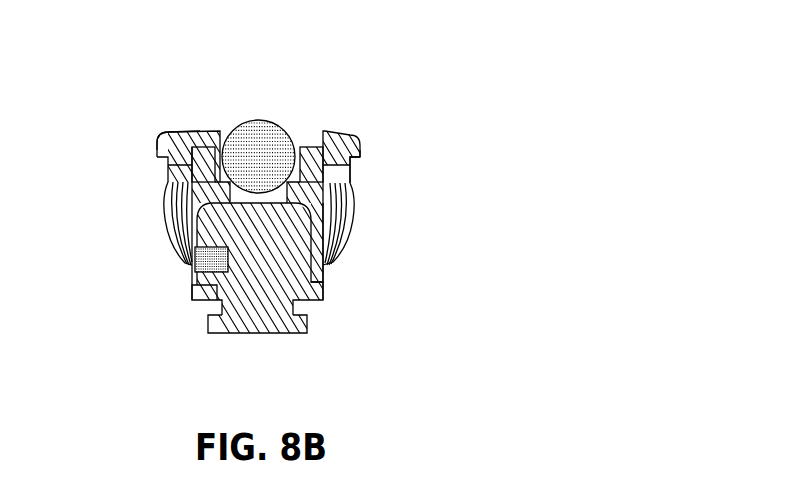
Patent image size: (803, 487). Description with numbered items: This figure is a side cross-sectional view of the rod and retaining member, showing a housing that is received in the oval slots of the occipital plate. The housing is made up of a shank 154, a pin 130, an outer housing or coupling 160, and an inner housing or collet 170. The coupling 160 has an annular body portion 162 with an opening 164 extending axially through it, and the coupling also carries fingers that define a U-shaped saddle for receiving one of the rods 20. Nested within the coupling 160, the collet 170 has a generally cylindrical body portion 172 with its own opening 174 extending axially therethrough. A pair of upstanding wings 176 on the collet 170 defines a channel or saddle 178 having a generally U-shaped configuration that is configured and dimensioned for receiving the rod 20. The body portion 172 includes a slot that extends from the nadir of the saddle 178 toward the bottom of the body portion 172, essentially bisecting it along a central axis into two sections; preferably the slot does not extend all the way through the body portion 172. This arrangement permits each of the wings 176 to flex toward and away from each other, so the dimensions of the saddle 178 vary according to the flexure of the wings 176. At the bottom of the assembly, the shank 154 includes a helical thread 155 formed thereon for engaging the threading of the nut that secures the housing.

The rod 20 is at (263, 120).
The pin 130 is at (193, 270).
The shank 154 is at (270, 333).
The helical thread 155 is at (213, 332).
The outer housing or coupling 160 is at (382, 217).
The annular body portion 162 is at (348, 232).
The opening 164 is at (302, 220).
The inner housing or collet 170 is at (320, 120).
The body portion 172 is at (357, 183).
The opening 174 is at (165, 213).
The upstanding wings 176 is at (303, 130).
The channel or saddle 178 is at (187, 148).